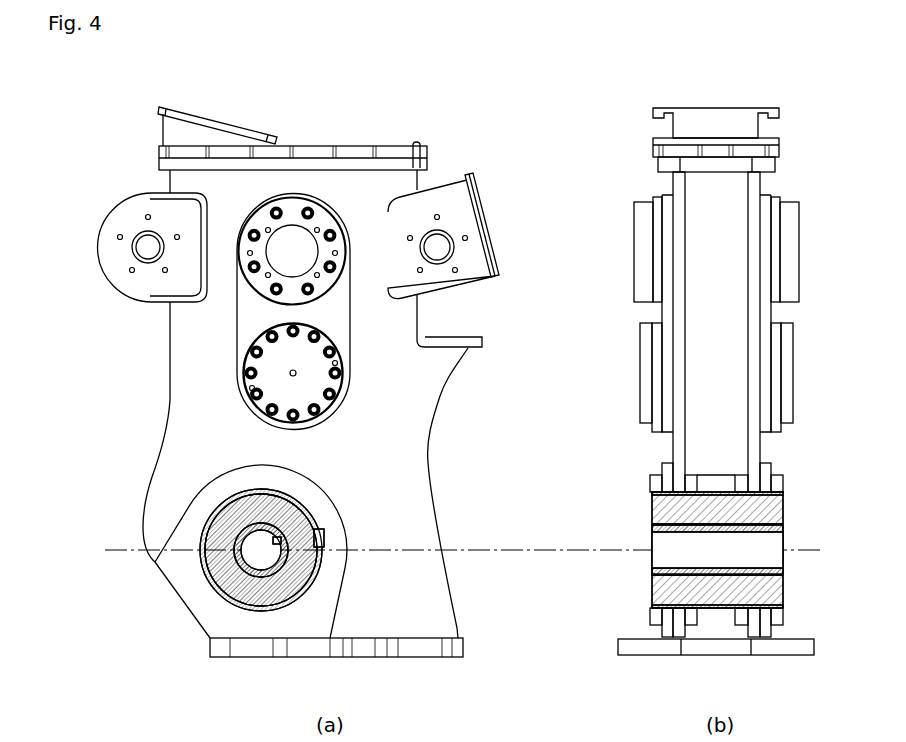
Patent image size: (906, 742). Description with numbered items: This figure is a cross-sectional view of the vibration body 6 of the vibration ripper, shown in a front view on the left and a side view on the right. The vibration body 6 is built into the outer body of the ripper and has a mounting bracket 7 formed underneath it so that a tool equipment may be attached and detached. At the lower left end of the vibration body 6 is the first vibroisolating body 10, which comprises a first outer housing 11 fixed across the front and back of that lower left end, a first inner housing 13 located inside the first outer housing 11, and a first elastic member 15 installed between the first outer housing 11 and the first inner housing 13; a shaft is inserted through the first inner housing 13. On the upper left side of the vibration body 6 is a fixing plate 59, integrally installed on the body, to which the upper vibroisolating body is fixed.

The vibration body 6 is at (185, 354).
The mounting bracket 7 is at (422, 652).
The first vibroisolating body 10 is at (188, 576).
The first outer housing 11 is at (218, 592).
The first inner housing 13 is at (270, 577).
The first elastic member 15 is at (243, 585).
The fixing plate 59 is at (125, 214).